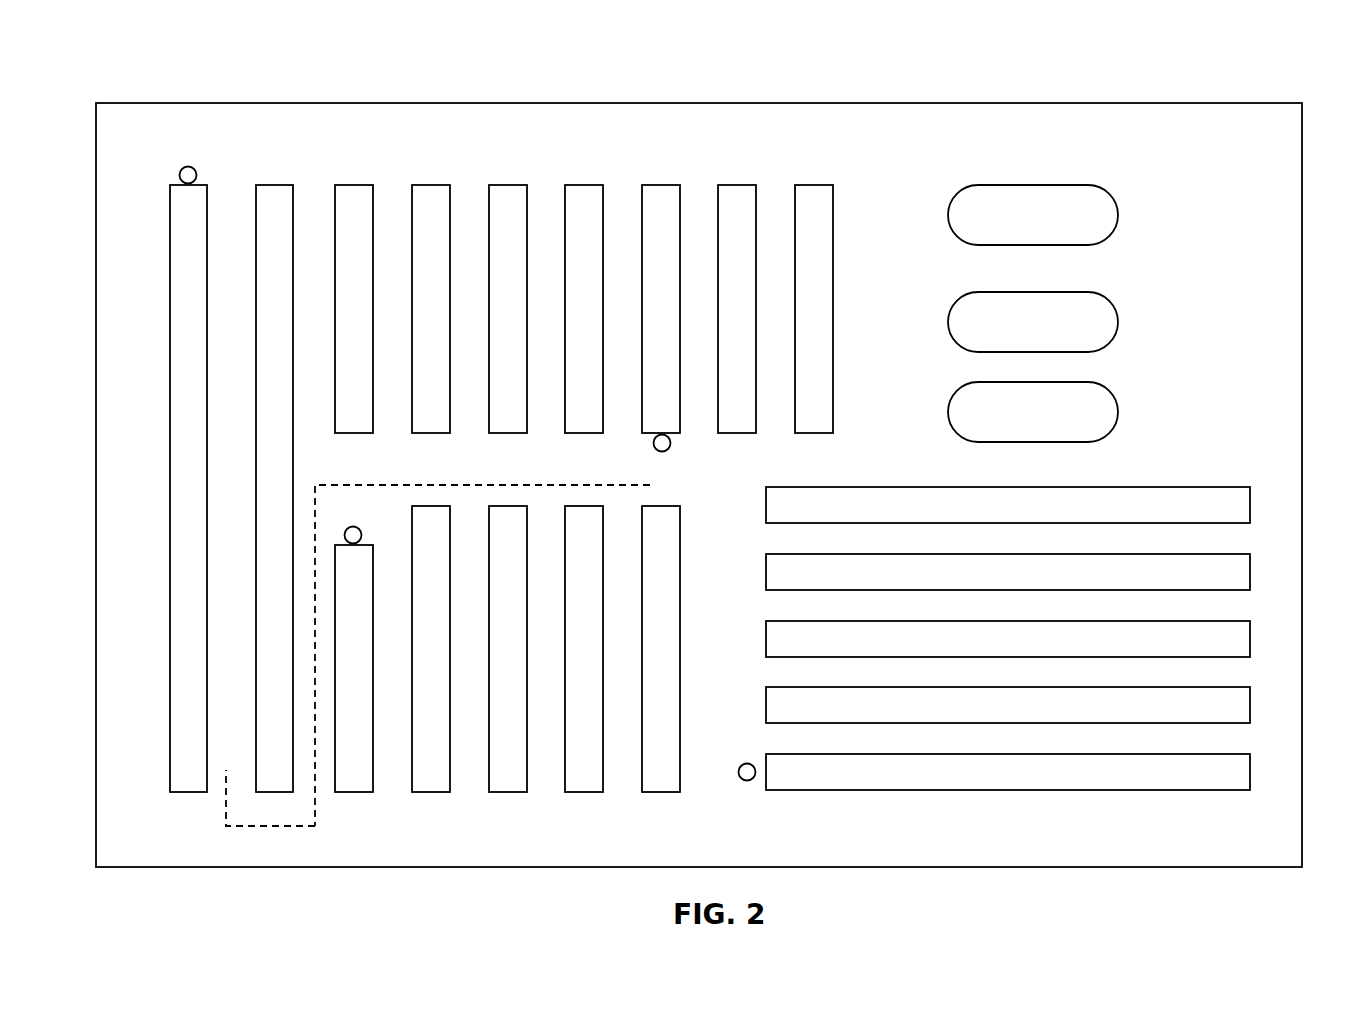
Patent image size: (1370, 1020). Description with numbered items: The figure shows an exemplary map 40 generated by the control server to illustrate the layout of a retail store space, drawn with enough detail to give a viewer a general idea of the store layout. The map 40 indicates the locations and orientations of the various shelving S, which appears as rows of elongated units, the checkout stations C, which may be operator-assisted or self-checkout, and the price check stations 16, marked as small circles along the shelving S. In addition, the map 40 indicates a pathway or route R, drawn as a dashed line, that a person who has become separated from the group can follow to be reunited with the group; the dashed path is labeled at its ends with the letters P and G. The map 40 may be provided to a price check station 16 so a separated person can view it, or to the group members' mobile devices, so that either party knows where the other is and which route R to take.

The map 40 is at (1183, 56).
The price check station 16 is at (188, 166).
The shelving S is at (495, 185).
The checkout stations C is at (1033, 313).
The path P is at (491, 649).
The gap G is at (266, 785).
The route R is at (317, 628).